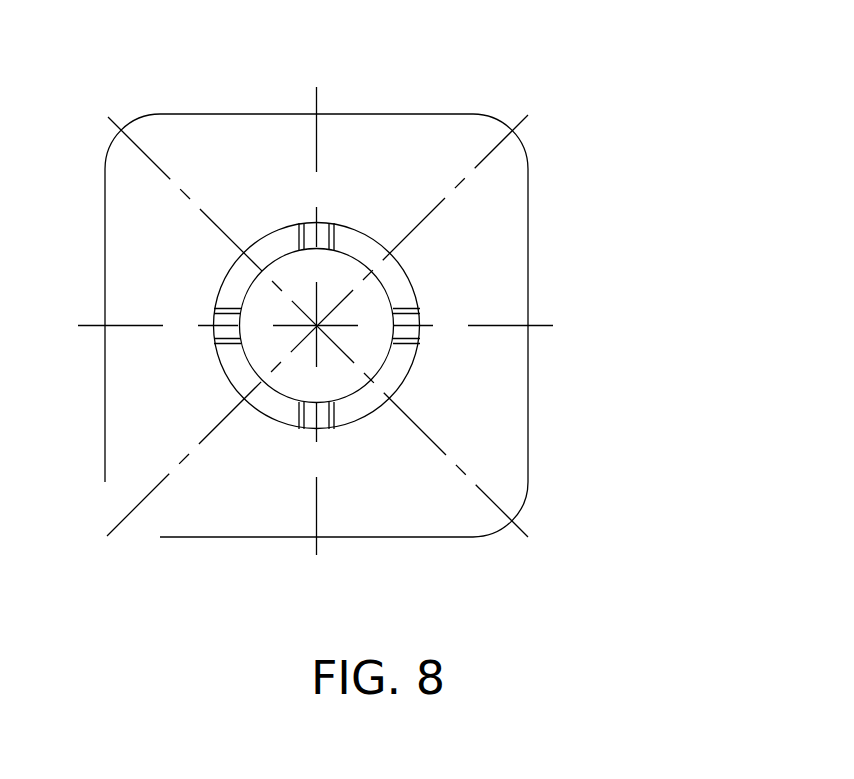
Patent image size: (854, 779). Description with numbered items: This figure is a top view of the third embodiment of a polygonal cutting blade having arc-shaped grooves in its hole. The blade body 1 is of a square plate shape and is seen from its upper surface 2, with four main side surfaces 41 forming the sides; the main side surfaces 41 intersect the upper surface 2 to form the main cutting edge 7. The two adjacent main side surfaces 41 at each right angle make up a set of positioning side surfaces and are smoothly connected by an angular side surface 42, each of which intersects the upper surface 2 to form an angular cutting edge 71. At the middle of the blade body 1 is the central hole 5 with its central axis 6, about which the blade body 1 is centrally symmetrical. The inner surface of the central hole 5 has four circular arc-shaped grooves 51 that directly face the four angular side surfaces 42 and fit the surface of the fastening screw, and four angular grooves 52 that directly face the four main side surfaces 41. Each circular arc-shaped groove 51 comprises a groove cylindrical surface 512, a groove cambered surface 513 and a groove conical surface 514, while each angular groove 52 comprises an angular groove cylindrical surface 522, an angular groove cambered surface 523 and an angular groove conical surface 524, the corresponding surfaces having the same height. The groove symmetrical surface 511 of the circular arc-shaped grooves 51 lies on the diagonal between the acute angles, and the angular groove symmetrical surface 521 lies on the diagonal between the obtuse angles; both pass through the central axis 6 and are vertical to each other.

The blade body 1 is at (169, 426).
The upper surface 2 is at (185, 352).
The central hole 5 is at (235, 293).
The circular arc-shaped groove 51 is at (266, 242).
The groove symmetrical surface 511 is at (479, 173).
The groove cylindrical surface 512 is at (394, 254).
The groove cambered surface 513 is at (415, 269).
The groove conical surface 514 is at (438, 280).
The angular groove 52 is at (454, 398).
The angular groove symmetrical surface 521 is at (328, 126).
The angular groove cylindrical surface 522 is at (412, 344).
The angular groove cambered surface 523 is at (424, 339).
The angular groove conical surface 524 is at (438, 336).
The central axis 6 is at (306, 344).
The main cutting edge 7 is at (295, 108).
The angular cutting edge 71 is at (510, 111).
The main side surface 41 is at (464, 548).
The angular side surface 42 is at (503, 548).